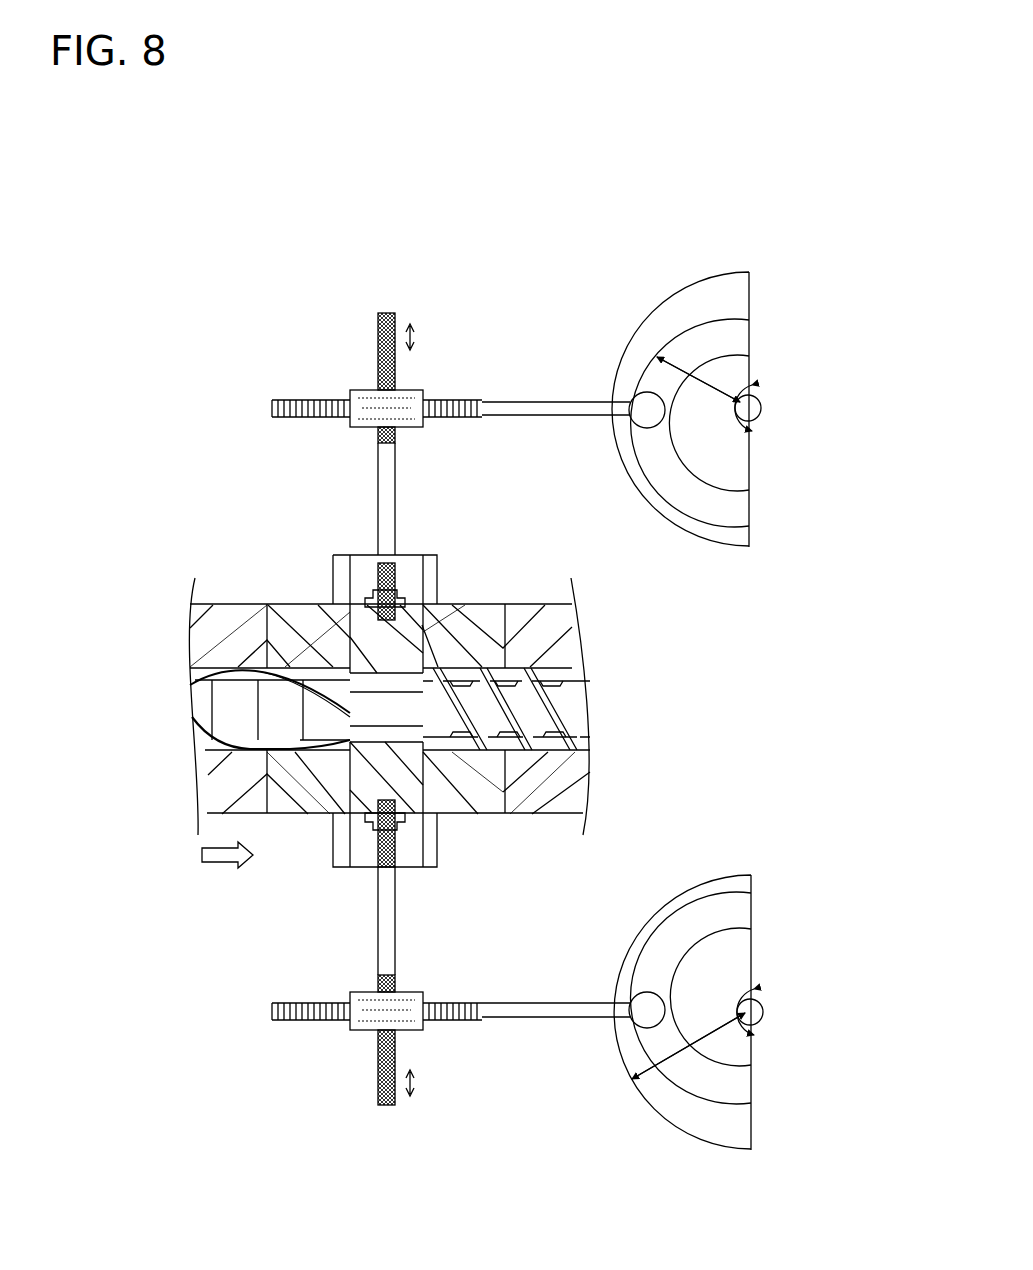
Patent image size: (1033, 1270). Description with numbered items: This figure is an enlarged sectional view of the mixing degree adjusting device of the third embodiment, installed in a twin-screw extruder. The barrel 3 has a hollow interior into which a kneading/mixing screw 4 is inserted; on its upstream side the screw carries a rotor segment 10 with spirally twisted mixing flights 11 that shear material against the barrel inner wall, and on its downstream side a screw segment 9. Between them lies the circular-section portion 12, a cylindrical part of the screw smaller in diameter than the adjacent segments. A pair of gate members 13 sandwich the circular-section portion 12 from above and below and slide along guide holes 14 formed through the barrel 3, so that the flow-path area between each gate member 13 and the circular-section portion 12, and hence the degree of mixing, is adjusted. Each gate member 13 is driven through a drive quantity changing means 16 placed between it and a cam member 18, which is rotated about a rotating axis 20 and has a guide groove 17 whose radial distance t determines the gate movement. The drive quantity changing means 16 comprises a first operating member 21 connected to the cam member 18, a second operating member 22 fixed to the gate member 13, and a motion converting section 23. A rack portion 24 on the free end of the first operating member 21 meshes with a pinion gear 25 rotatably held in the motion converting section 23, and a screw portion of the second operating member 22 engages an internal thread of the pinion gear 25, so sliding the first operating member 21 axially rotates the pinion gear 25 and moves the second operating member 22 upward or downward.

The barrel 3 is at (560, 624).
The kneading/mixing screw 4 is at (566, 726).
The screw segment 9 is at (562, 702).
The rotor segment 10 is at (227, 702).
The mixing flight 11 is at (205, 752).
The circular-section portion 12 is at (367, 732).
The gate member 13 is at (433, 626).
The guide hole 14 is at (358, 604).
The drive quantity changing means 16 is at (554, 648).
The guide groove 17 is at (718, 520).
The cam member 18 is at (736, 478).
The rotating axis 20 is at (758, 418).
The first operating member 21 is at (539, 418).
The second operating member 22 is at (392, 492).
The motion converting section 23 is at (428, 390).
The rack portion 24 is at (305, 398).
The pinion gear 25 is at (368, 428).